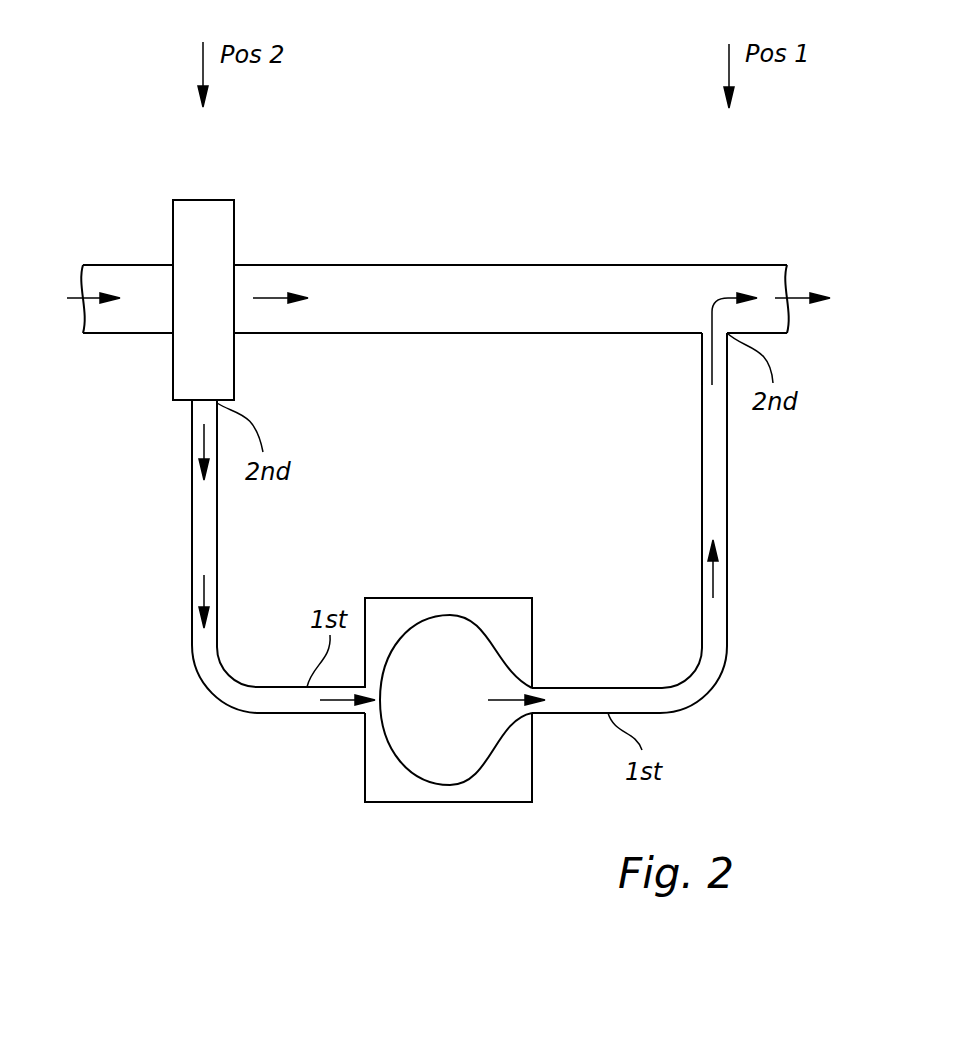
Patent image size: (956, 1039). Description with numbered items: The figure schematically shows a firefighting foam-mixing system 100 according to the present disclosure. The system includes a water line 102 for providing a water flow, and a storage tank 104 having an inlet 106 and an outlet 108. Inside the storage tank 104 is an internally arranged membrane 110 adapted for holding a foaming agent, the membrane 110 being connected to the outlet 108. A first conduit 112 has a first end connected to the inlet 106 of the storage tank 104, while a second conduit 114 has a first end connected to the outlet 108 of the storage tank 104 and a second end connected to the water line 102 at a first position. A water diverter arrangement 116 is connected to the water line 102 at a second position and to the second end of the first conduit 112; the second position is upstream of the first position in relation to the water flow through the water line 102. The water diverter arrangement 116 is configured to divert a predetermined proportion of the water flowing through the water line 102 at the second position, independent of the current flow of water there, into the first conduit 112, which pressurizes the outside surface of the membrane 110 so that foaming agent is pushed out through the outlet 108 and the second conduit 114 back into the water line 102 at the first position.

The firefighting foam-mixing system 100 is at (508, 108).
The water line 102 is at (675, 265).
The storage tank 104 is at (503, 598).
The inlet 106 is at (337, 713).
The outlet 108 is at (568, 688).
The membrane 110 is at (385, 752).
The first conduit 112 is at (192, 640).
The second conduit 114 is at (727, 505).
The water diverter arrangement 116 is at (215, 200).